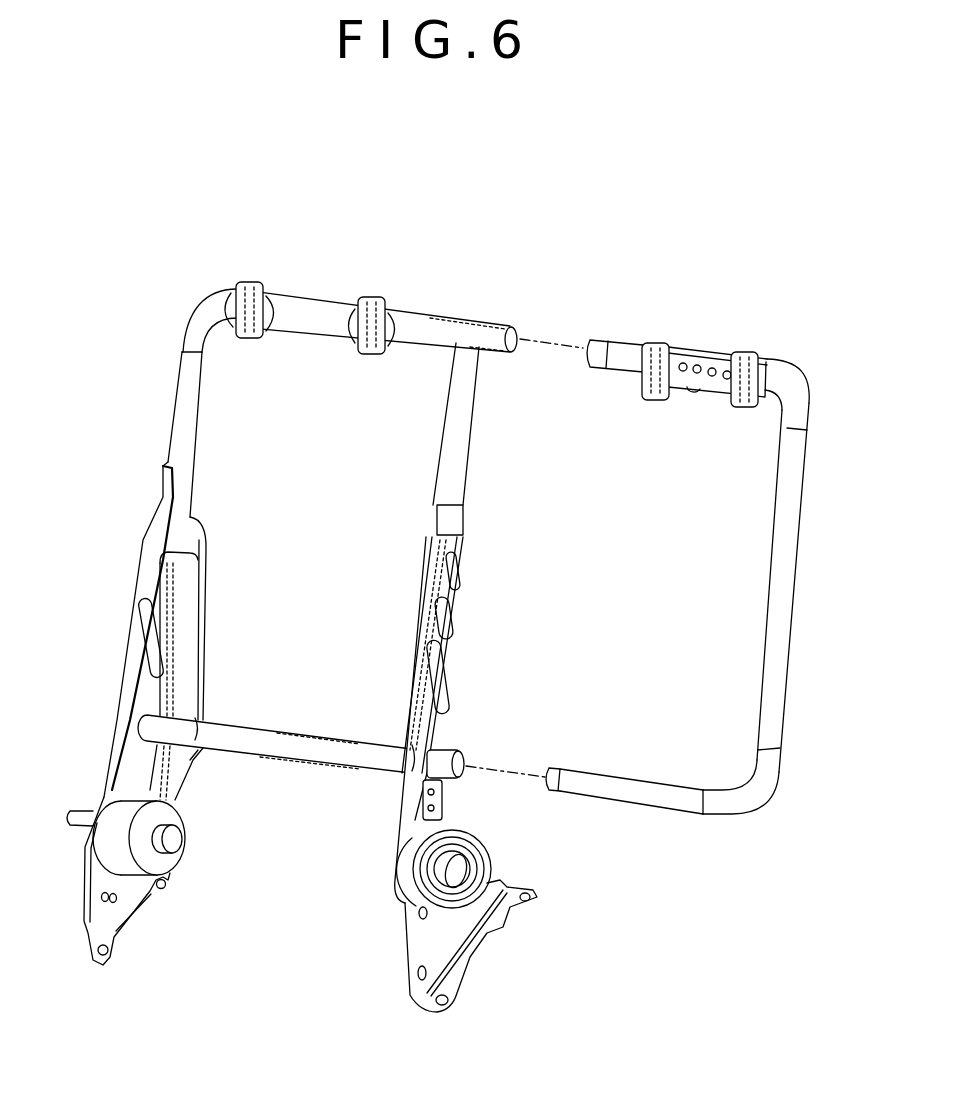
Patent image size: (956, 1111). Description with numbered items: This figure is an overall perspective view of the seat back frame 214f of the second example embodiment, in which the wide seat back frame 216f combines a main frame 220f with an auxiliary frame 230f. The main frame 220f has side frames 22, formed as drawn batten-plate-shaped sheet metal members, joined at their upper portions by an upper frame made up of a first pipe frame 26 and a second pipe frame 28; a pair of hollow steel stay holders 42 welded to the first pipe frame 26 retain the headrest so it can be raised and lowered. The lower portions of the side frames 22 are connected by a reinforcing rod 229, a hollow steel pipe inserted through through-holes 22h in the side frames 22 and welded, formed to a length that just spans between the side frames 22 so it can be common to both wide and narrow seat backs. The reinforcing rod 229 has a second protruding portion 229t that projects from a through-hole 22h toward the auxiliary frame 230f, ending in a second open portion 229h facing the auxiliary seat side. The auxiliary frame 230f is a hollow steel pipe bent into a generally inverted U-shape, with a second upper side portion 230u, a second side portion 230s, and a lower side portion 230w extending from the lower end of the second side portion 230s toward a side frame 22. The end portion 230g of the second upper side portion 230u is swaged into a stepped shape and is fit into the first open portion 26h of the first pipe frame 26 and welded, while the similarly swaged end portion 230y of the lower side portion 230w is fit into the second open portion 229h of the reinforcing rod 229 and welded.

The wide seat back frame 216f is at (447, 587).
The seat back frame 214f is at (447, 620).
The main frame 220f is at (190, 318).
The first pipe frame 26 is at (404, 290).
The first open portion 26h is at (520, 330).
The second pipe frame 28 is at (447, 443).
The stay holder 42 is at (251, 283).
The side frame 22 is at (193, 578).
The through-hole 22h is at (195, 718).
The reinforcing rod 229 is at (277, 752).
The second protruding portion 229t is at (452, 750).
The second open portion 229h is at (465, 764).
The end portion 230g is at (592, 340).
The second upper side portion 230u is at (628, 350).
The auxiliary frame 230f is at (797, 378).
The second side portion 230s is at (773, 620).
The lower side portion 230w is at (662, 794).
The end portion 230y is at (553, 787).